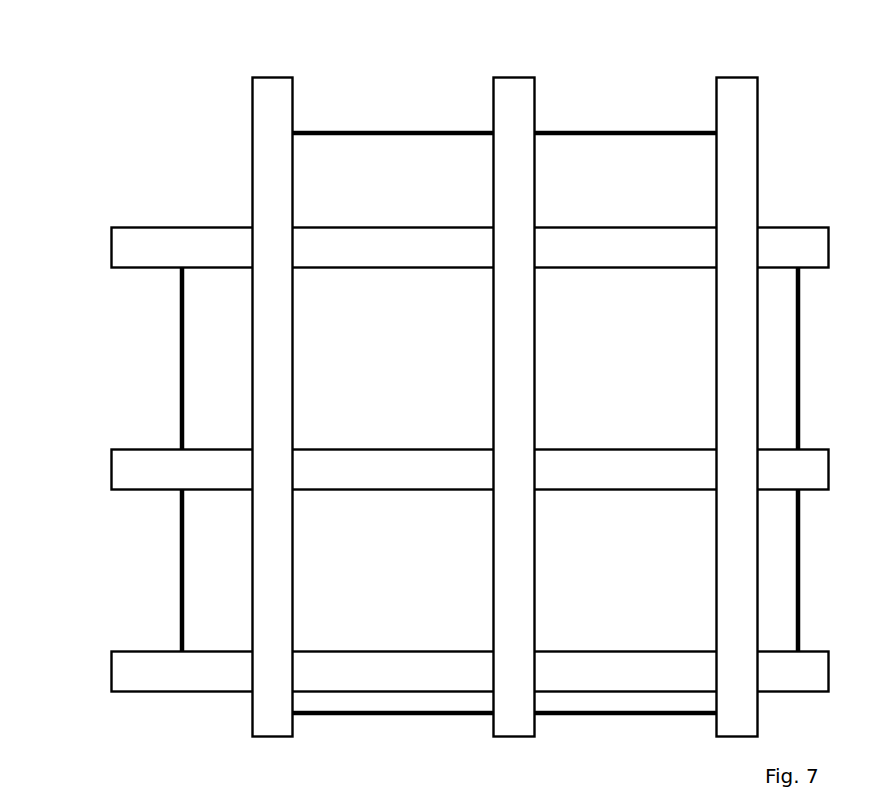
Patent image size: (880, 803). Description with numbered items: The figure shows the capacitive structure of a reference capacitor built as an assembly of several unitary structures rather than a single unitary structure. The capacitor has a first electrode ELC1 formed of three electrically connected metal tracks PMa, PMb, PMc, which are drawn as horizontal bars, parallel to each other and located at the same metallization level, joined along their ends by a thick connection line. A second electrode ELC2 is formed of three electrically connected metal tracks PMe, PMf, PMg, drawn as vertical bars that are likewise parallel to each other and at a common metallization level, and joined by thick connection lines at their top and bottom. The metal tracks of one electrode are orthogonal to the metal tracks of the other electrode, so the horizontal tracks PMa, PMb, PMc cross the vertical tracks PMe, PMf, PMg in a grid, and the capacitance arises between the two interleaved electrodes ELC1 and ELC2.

The metal track PMa is at (110, 248).
The metal track PMb is at (110, 470).
The metal track PMc is at (110, 672).
The metal track PMe is at (269, 87).
The metal track PMf is at (511, 87).
The pixel electrode / memory line g PMg is at (732, 85).
The first electrode ELC1 is at (177, 237).
The second electrode ELC2 is at (748, 158).